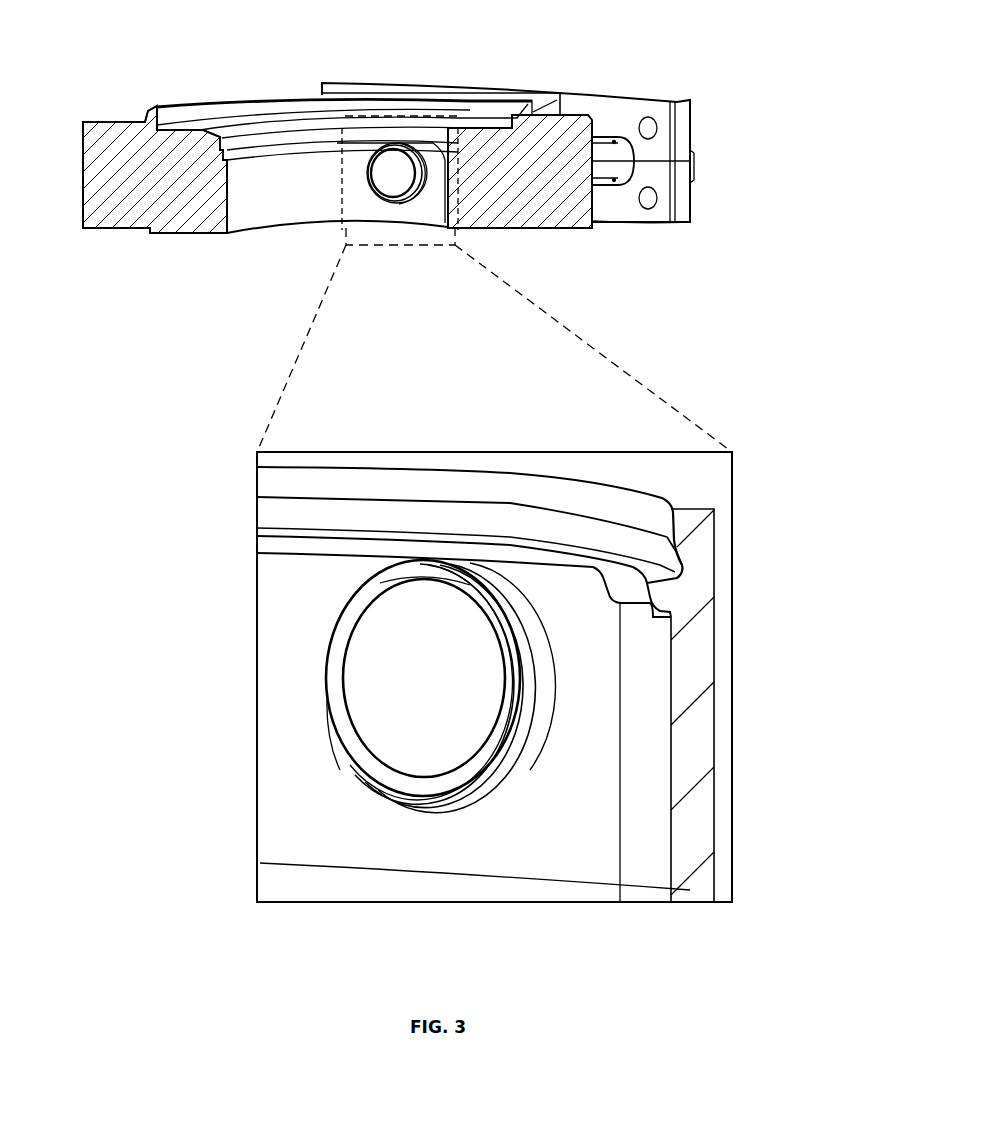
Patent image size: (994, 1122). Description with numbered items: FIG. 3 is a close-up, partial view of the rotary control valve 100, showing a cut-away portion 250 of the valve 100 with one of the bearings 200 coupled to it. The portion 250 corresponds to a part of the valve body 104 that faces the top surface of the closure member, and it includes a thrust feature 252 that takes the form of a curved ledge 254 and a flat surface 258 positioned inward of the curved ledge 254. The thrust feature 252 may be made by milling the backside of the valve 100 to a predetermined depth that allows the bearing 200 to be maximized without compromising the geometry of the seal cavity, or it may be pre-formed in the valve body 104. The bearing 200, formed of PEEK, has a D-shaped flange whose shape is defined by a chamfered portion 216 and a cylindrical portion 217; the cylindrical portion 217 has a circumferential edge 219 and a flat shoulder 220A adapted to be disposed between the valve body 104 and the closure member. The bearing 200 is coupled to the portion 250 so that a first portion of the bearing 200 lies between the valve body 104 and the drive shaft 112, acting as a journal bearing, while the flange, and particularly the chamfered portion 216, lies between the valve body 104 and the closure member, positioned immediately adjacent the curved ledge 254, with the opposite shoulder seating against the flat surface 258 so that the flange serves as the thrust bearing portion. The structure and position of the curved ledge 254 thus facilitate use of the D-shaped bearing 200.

The rotary control valve 100 is at (514, 52).
The valve body 104 is at (568, 203).
The cut-away portion 250 is at (287, 246).
The drive shaft 112 is at (387, 707).
The shoulder 220A is at (414, 800).
The circumferential edge 219 is at (457, 815).
The bearing 200 is at (548, 792).
The chamfered portion 216 is at (427, 583).
The cylindrical portion 217 is at (325, 706).
The curved ledge 254 is at (647, 595).
The thrust feature 252 is at (592, 632).
The flat surface 258 is at (598, 694).